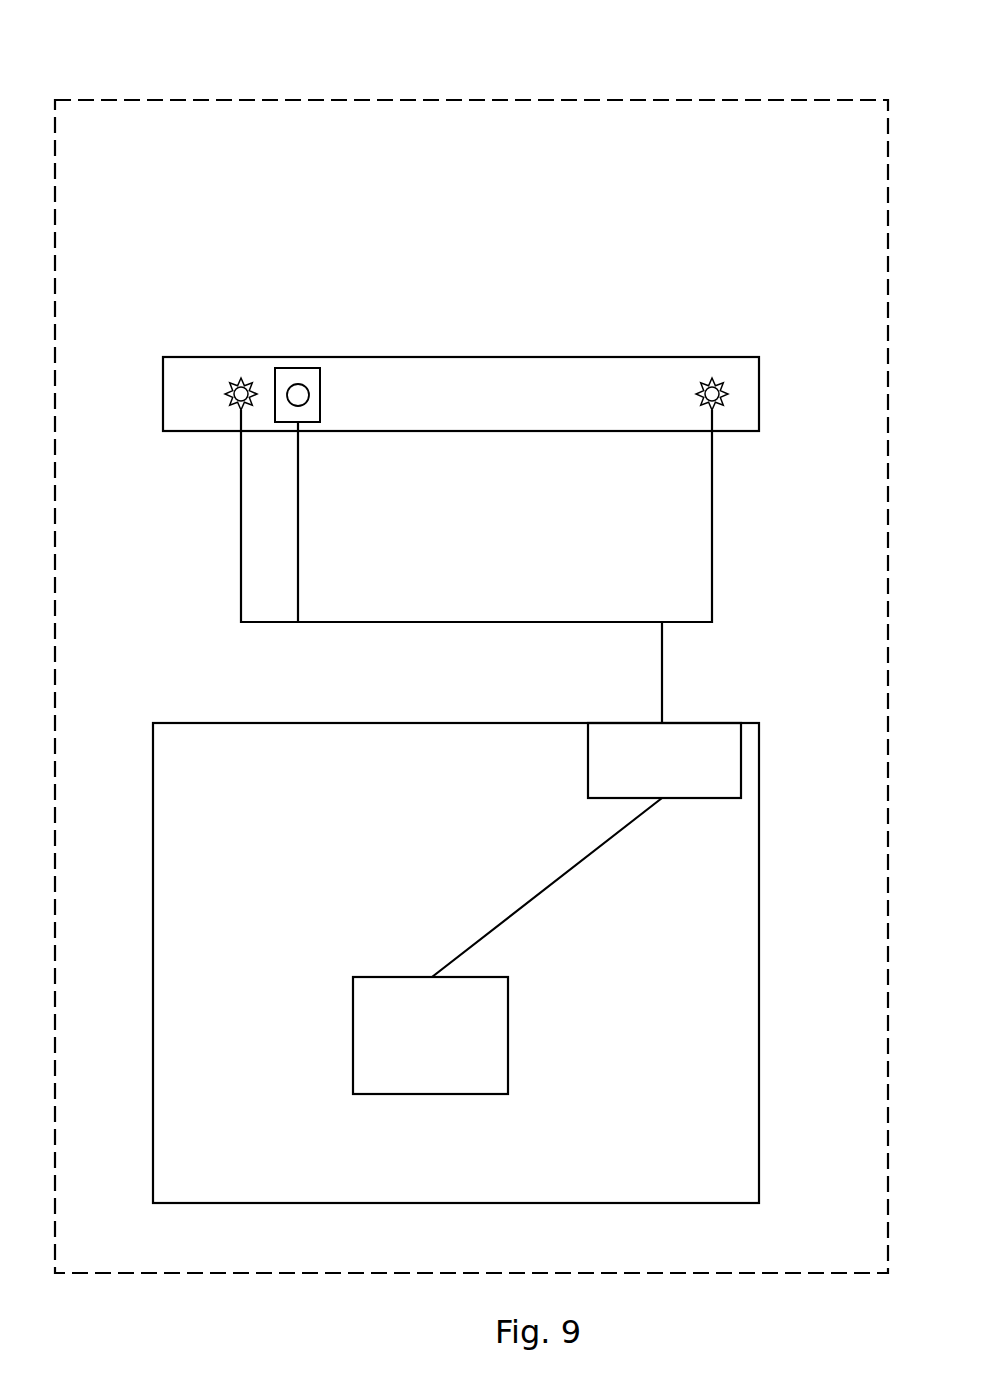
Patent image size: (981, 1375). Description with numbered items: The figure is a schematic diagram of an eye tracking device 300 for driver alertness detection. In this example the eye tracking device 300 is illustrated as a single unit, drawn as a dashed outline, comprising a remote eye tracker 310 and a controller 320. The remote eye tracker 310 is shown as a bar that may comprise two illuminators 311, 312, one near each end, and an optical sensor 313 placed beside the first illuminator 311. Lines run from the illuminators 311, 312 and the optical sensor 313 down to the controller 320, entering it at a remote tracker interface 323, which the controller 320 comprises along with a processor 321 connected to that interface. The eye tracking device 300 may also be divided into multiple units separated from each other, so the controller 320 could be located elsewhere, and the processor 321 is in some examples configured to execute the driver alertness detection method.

The eye tracking device 300 is at (630, 99).
The remote eye tracker 310 is at (463, 357).
The illuminator 311 is at (240, 382).
The illuminator 312 is at (712, 382).
The optical sensor 313 is at (305, 368).
The controller 320 is at (760, 723).
The processor 321 is at (430, 1035).
The remote tracker interface 323 is at (664, 760).